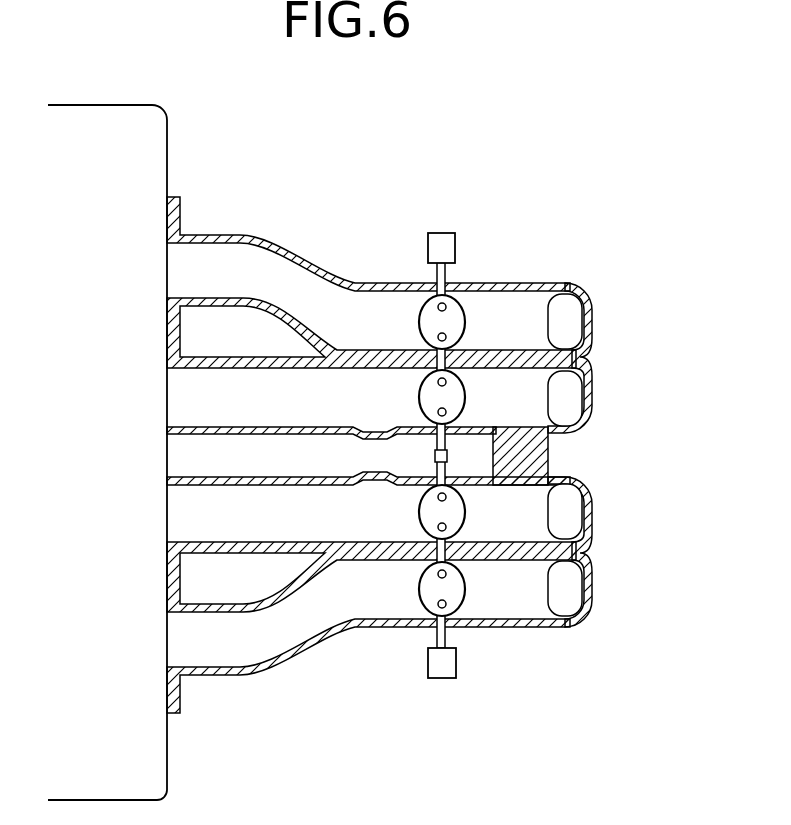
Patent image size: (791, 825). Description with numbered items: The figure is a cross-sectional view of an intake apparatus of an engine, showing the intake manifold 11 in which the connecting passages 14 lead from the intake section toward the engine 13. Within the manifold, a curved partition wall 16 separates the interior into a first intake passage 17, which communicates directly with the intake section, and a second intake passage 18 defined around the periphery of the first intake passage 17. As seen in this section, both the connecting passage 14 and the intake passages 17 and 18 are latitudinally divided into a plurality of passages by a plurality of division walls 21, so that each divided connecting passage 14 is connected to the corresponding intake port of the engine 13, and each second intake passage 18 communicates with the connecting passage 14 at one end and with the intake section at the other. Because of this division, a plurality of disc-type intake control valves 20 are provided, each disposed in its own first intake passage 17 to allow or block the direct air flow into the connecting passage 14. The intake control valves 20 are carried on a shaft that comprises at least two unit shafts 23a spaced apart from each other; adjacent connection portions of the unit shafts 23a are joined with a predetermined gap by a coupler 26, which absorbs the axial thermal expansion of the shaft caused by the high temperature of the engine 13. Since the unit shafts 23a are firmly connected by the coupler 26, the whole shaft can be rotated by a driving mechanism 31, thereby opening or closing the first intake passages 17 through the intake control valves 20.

The intake manifold 11 is at (508, 263).
The engine 13 is at (157, 160).
The connecting passage 14 is at (270, 258).
The partition wall 16 is at (560, 323).
The first intake passage 17 is at (528, 398).
The second intake passage 18 is at (573, 332).
The intake control valve 20 is at (453, 512).
The division wall 21 is at (388, 430).
The unit shaft 23a is at (447, 444).
The coupler 26 is at (447, 461).
The driving mechanism 31 is at (445, 243).